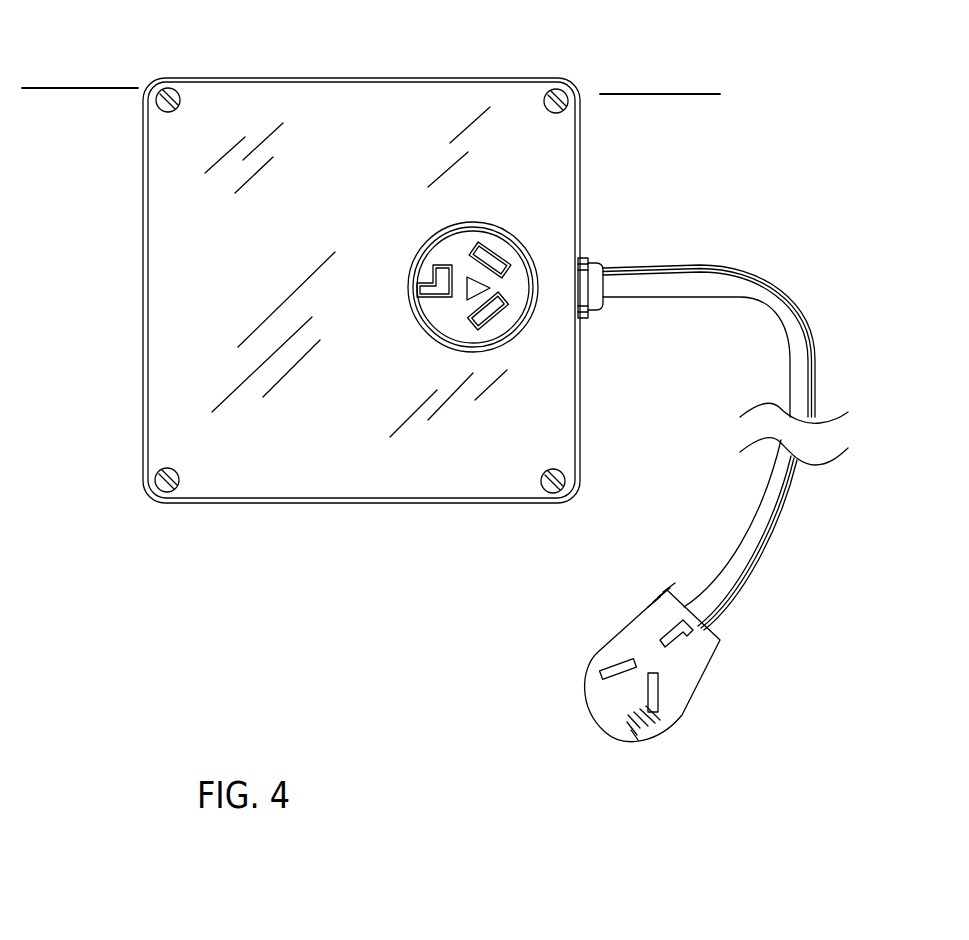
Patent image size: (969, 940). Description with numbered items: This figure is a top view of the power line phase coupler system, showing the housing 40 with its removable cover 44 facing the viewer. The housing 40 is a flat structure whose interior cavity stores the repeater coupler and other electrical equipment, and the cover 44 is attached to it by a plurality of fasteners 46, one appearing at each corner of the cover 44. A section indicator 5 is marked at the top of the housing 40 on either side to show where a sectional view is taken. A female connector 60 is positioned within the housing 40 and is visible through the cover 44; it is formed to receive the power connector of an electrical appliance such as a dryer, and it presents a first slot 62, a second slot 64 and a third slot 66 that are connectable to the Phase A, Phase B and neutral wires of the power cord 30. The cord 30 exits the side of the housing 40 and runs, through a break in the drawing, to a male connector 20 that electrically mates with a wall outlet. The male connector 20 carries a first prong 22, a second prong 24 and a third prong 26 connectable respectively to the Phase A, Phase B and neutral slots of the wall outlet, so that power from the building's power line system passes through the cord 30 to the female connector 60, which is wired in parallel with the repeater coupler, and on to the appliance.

The section line for FIG. 5 is at (63, 78).
The male connector 20 is at (675, 714).
The first prong 22 is at (615, 667).
The second prong 24 is at (655, 690).
The third prong 26 is at (704, 622).
The cord 30 is at (623, 285).
The housing 40 is at (356, 74).
The removable cover 44 is at (233, 255).
The fasteners 46 is at (156, 103).
The female connector 60 is at (490, 353).
The first slot 62 is at (470, 330).
The second slot 64 is at (495, 262).
The third slot 66 is at (418, 290).